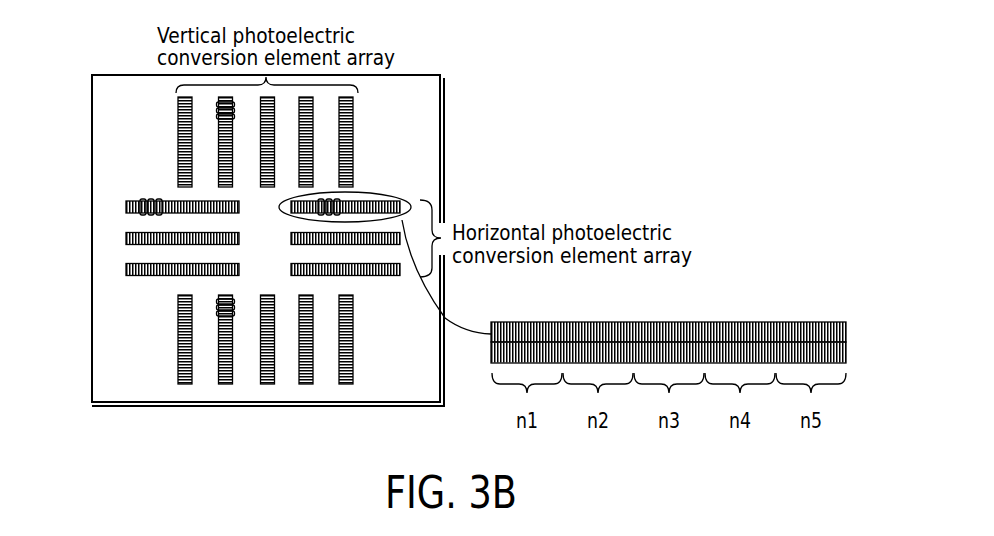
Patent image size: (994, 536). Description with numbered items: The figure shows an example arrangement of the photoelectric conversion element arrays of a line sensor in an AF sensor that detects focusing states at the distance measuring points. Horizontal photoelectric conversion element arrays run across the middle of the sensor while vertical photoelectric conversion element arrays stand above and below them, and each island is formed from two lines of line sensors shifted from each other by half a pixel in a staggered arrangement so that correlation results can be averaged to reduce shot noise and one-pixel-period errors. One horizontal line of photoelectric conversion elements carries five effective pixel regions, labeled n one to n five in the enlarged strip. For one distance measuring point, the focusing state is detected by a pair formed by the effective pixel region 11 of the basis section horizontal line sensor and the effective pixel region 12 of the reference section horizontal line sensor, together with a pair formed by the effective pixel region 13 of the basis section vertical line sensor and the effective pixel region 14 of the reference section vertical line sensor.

The effective pixel region of the basis section horizontal line sensor 11 is at (141, 206).
The effective pixel region of the reference section horizontal line sensor 12 is at (348, 203).
The effective pixel region of the basis section vertical line sensor 13 is at (223, 101).
The effective pixel region of the reference section vertical line sensor 14 is at (219, 297).